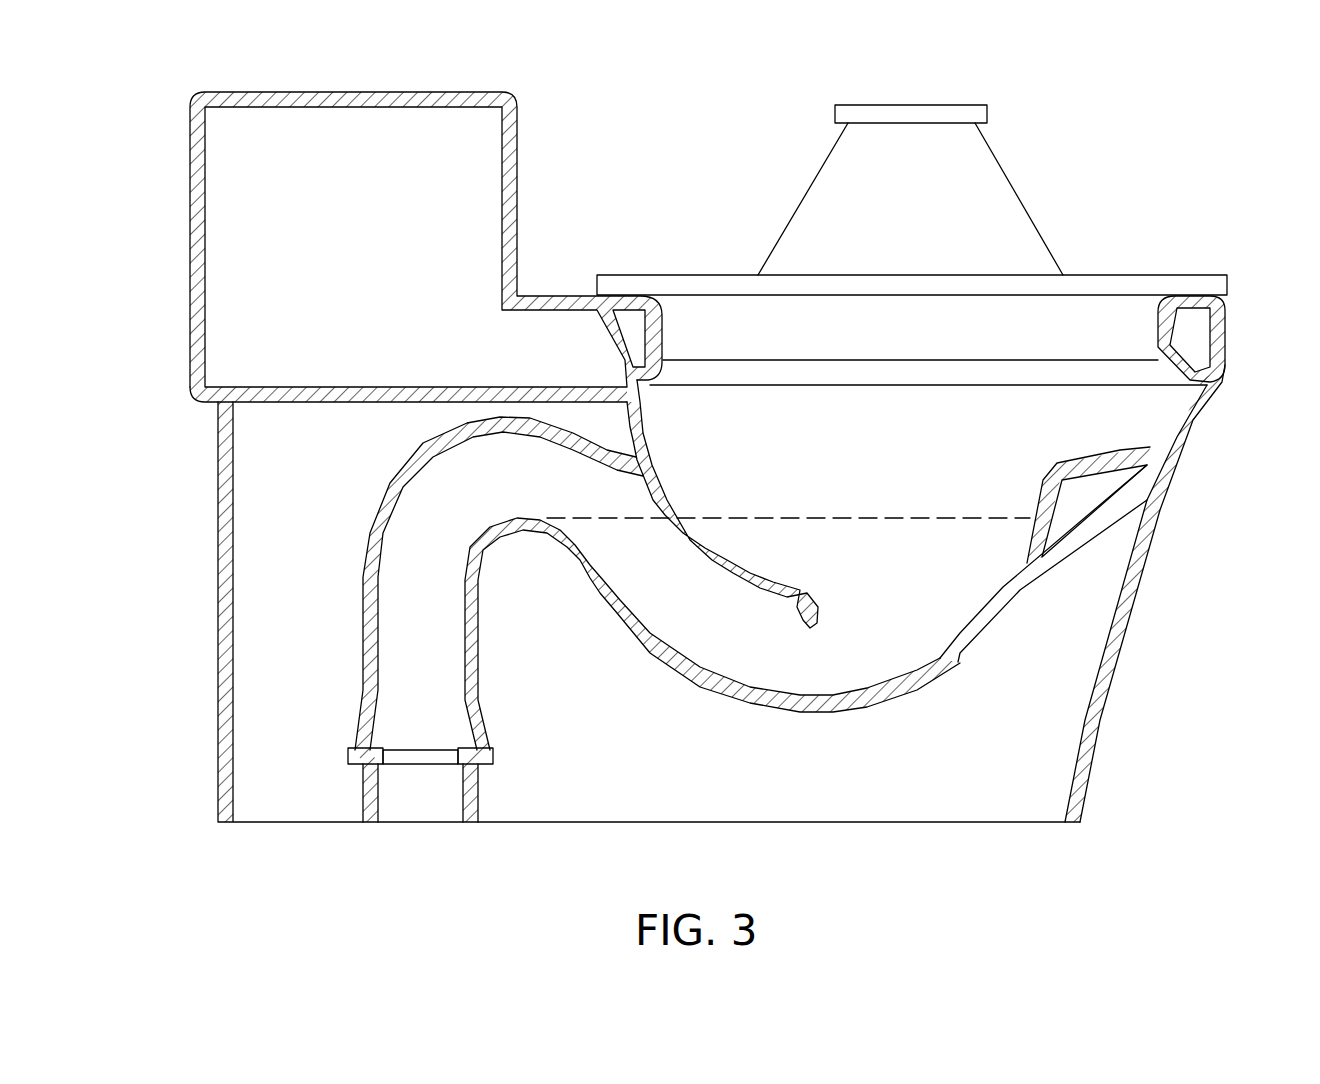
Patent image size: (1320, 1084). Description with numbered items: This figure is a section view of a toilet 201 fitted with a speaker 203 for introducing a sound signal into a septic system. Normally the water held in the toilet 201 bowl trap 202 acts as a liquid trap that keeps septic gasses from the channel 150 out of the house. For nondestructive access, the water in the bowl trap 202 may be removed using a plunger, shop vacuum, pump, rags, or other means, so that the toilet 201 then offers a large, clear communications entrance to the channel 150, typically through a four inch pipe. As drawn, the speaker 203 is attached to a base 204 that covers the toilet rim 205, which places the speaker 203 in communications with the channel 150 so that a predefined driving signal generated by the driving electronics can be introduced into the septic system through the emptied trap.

The channel 150 is at (1118, 413).
The toilet 201 is at (218, 535).
The bowl trap 202 is at (792, 753).
The speaker 203 is at (987, 114).
The base 204 is at (1185, 275).
The toilet rim 205 is at (572, 296).